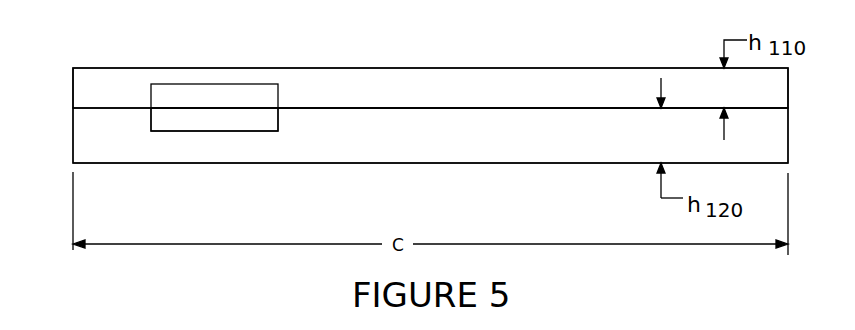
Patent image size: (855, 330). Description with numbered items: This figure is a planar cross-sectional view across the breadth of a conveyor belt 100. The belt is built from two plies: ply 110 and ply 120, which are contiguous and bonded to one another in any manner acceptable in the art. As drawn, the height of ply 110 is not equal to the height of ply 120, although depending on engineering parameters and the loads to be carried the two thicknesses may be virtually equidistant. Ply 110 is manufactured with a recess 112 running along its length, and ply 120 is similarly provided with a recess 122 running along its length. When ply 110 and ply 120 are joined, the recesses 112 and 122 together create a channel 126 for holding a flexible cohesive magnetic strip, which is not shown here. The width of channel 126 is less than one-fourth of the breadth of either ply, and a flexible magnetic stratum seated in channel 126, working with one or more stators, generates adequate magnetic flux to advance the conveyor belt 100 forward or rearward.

The conveyor belt 100 is at (463, 182).
The ply 110 is at (96, 91).
The recess 112 is at (207, 92).
The ply 120 is at (104, 130).
The recess 122 is at (207, 124).
The channel 126 is at (238, 108).